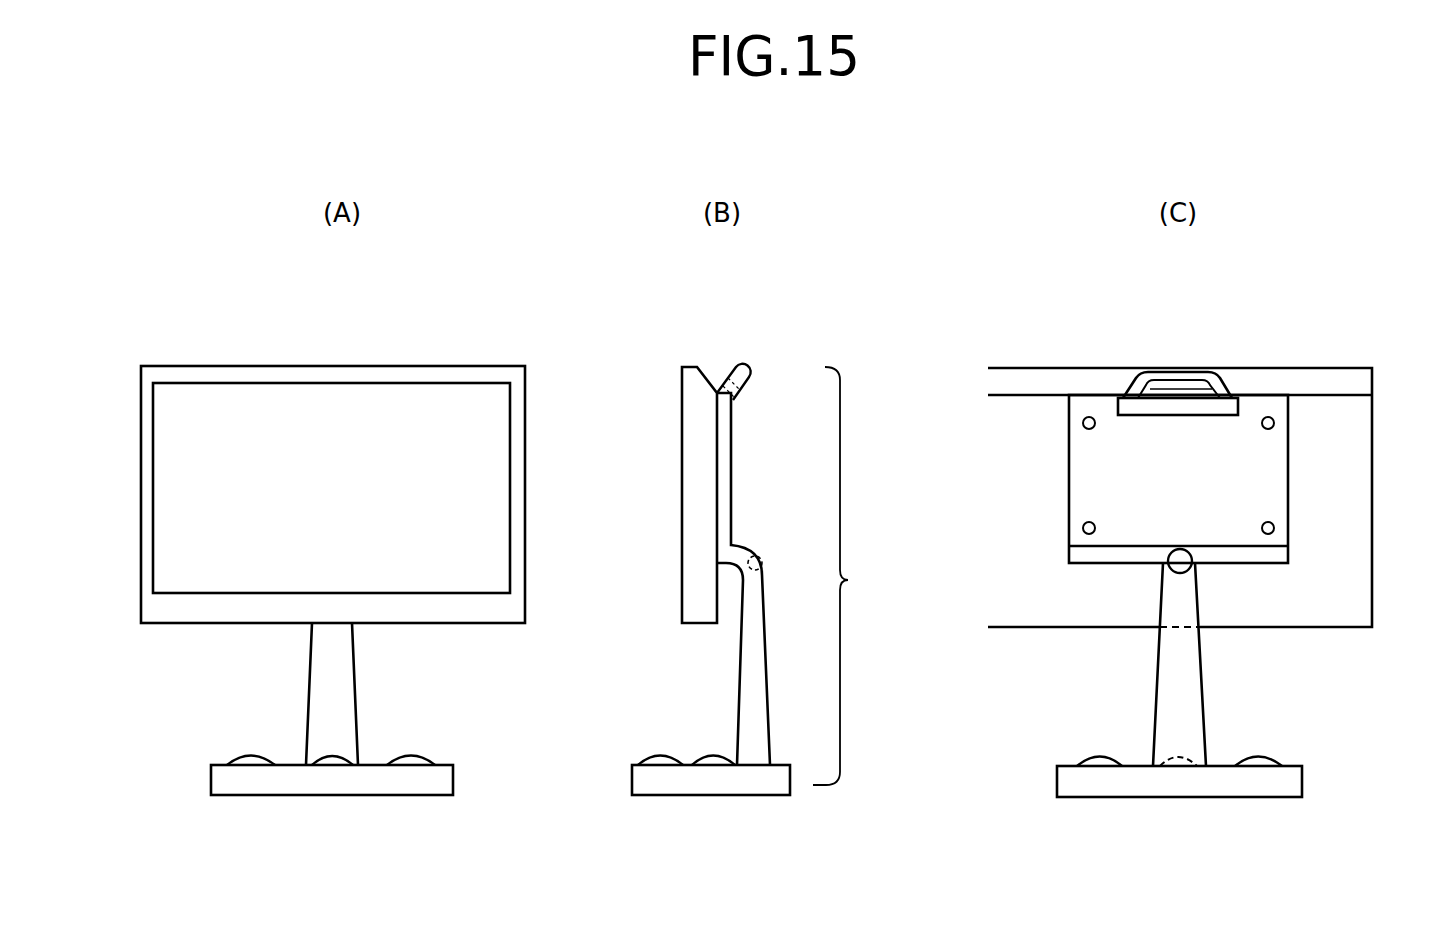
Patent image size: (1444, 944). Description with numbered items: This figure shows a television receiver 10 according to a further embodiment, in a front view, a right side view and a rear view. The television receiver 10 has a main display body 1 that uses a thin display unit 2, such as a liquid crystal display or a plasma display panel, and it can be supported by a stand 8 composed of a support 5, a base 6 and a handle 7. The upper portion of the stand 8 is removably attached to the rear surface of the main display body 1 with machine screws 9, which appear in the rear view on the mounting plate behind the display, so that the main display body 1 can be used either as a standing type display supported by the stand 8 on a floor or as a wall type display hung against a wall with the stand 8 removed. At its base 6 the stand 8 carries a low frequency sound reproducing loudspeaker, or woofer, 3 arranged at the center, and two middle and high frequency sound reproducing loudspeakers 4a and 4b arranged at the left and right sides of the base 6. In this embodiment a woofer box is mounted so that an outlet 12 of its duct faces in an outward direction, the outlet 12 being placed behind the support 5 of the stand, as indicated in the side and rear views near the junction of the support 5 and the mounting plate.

The main display body 1 is at (525, 475).
The thin display unit 2 is at (175, 470).
The low frequency sound reproducing loudspeaker (woofer) 3 is at (332, 765).
The middle and high frequency sound reproducing loudspeaker 4a is at (251, 757).
The middle and high frequency sound reproducing loudspeaker 4b is at (408, 757).
The support 5 is at (347, 675).
The base 6 is at (422, 783).
The handle 7 is at (750, 380).
The stand 8 is at (849, 576).
The machine screws 9 is at (1275, 423).
The television receiver 10 is at (473, 346).
The outlet 12 is at (763, 562).